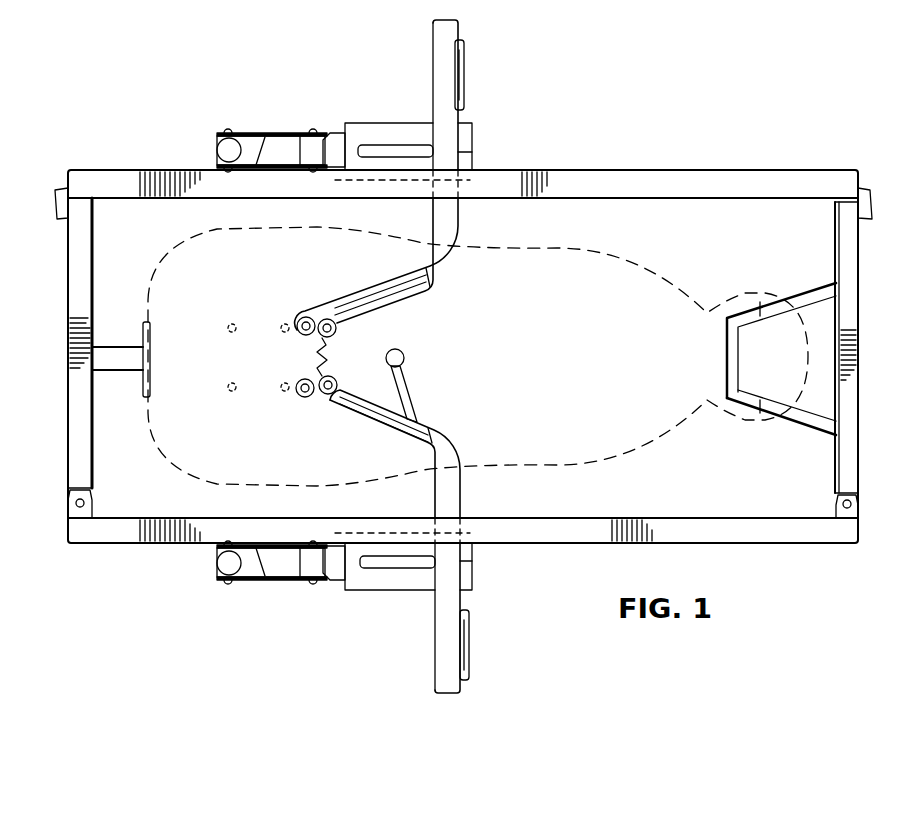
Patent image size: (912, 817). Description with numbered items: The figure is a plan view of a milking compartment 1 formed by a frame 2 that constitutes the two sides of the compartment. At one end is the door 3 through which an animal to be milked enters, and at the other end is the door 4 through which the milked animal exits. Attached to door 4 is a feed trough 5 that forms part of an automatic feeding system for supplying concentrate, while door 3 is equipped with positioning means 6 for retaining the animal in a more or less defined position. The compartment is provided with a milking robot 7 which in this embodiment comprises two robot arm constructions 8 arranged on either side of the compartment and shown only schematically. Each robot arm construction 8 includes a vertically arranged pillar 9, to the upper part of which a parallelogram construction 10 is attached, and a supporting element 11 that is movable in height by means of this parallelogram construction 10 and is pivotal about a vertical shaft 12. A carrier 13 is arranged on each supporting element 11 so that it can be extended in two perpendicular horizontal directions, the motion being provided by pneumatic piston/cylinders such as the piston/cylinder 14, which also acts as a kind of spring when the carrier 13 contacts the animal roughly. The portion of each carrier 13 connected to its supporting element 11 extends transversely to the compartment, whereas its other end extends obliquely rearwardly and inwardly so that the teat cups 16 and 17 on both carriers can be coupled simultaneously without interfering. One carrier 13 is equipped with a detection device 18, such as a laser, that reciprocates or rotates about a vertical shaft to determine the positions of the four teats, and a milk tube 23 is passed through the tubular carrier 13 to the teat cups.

The milking compartment 1 is at (726, 249).
The frame 2 is at (673, 178).
The door 3 is at (77, 287).
The door 4 is at (850, 450).
The feed trough 5 is at (750, 355).
The positioning means 6 is at (113, 345).
The milking robot 7 is at (333, 68).
The robot arm construction 8 is at (279, 126).
The pillar 9 is at (220, 152).
The parallelogram construction 10 is at (263, 128).
The supporting element 11 is at (402, 122).
The vertical shaft 12 is at (342, 150).
The carrier 13 is at (436, 33).
The pneumatic piston/cylinder 14 is at (465, 78).
The teat cup 16 is at (303, 315).
The teat cup 17 is at (341, 357).
The detection device 18 is at (403, 355).
The milk tube 23 is at (396, 280).